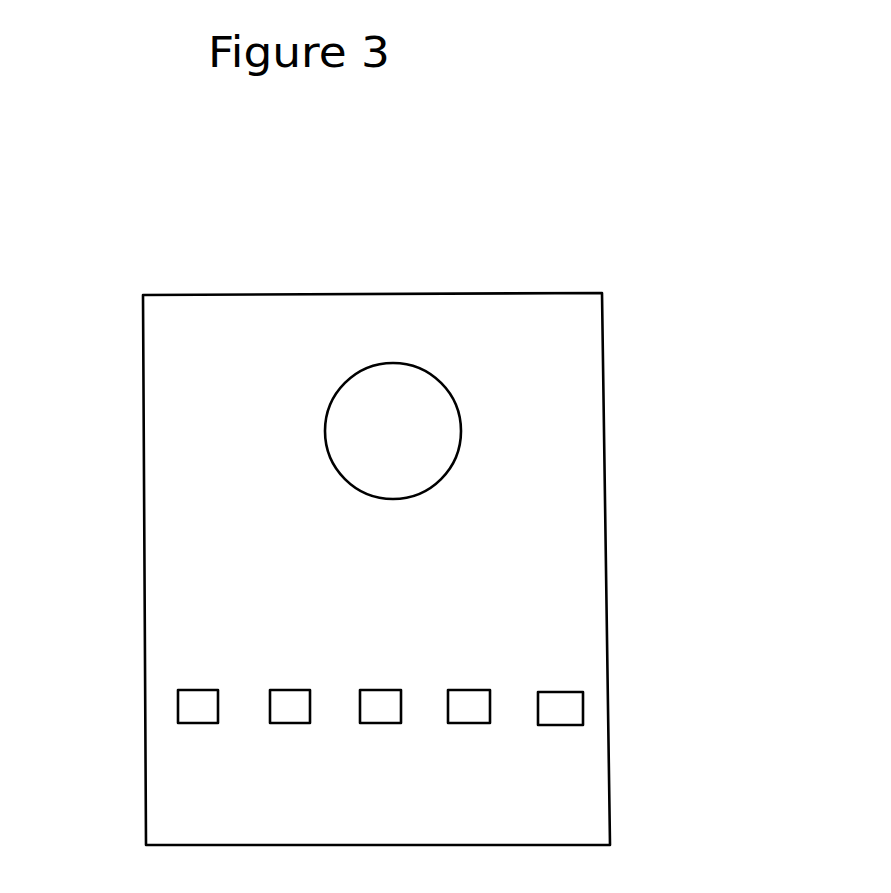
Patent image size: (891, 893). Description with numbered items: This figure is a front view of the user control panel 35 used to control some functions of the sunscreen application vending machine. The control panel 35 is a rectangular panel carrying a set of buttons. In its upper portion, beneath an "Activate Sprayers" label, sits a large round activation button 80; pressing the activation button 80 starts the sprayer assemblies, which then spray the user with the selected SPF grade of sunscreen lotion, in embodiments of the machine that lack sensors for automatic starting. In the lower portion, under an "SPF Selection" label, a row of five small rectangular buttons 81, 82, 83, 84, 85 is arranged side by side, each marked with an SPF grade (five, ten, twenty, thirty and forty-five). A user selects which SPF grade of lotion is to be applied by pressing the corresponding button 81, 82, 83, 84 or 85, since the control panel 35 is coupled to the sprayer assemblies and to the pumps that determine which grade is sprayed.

The user control panel 35 is at (728, 317).
The activation button 80 is at (350, 442).
The button 81 is at (192, 703).
The button 82 is at (285, 700).
The button 83 is at (398, 692).
The button 84 is at (477, 698).
The button 85 is at (573, 715).